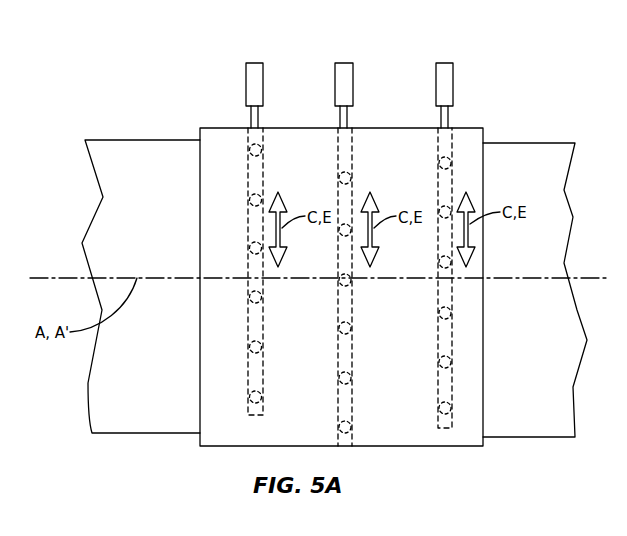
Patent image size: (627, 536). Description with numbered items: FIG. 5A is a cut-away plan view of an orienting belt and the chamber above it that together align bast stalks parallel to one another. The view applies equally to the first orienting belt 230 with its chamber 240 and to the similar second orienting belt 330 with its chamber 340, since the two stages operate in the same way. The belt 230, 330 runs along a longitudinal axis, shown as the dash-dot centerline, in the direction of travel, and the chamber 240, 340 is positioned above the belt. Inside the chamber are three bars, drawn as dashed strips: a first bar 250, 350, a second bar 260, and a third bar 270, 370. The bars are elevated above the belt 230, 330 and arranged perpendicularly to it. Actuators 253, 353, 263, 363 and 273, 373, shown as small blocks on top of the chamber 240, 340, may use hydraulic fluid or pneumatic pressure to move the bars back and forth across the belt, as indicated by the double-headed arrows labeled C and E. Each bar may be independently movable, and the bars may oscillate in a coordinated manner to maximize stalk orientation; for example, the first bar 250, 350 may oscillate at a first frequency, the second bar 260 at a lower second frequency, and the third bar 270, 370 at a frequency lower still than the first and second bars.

The first orienting belt 230 is at (334, 288).
The second orienting belt 330 is at (198, 268).
The chamber 240 is at (294, 248).
The chamber 340 is at (200, 88).
The actuator 253 is at (294, 83).
The actuator 353 is at (255, 63).
The actuator 263 is at (382, 83).
The actuator 363 is at (345, 63).
The actuator 273 is at (485, 83).
The actuator 373 is at (445, 63).
The first bar 250 is at (287, 271).
The first bar 350 is at (262, 180).
The second bar 260 is at (379, 287).
The third bar 370 is at (350, 180).
The third bar 270 is at (457, 178).